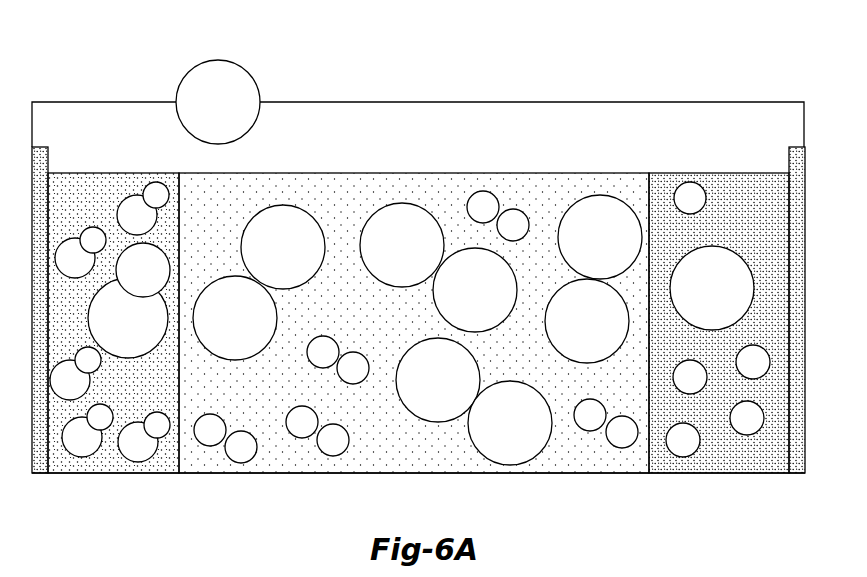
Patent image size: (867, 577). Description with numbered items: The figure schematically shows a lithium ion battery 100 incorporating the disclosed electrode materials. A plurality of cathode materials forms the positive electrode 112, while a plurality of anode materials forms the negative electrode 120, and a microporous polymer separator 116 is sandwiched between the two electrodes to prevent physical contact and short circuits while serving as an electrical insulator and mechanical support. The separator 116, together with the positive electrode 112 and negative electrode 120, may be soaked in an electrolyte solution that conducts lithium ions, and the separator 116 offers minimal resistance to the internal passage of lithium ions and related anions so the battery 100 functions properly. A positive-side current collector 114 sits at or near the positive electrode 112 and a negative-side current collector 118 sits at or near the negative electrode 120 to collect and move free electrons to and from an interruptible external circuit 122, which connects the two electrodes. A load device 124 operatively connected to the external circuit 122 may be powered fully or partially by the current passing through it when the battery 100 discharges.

The lithium ion battery 100 is at (580, 58).
The positive electrode 112 is at (110, 462).
The positive-side current collector 114 is at (40, 473).
The microporous polymer separator 116 is at (290, 455).
The negative-side current collector 118 is at (799, 473).
The negative electrode 120 is at (708, 460).
The external circuit 122 is at (467, 102).
The load device 124 is at (249, 72).